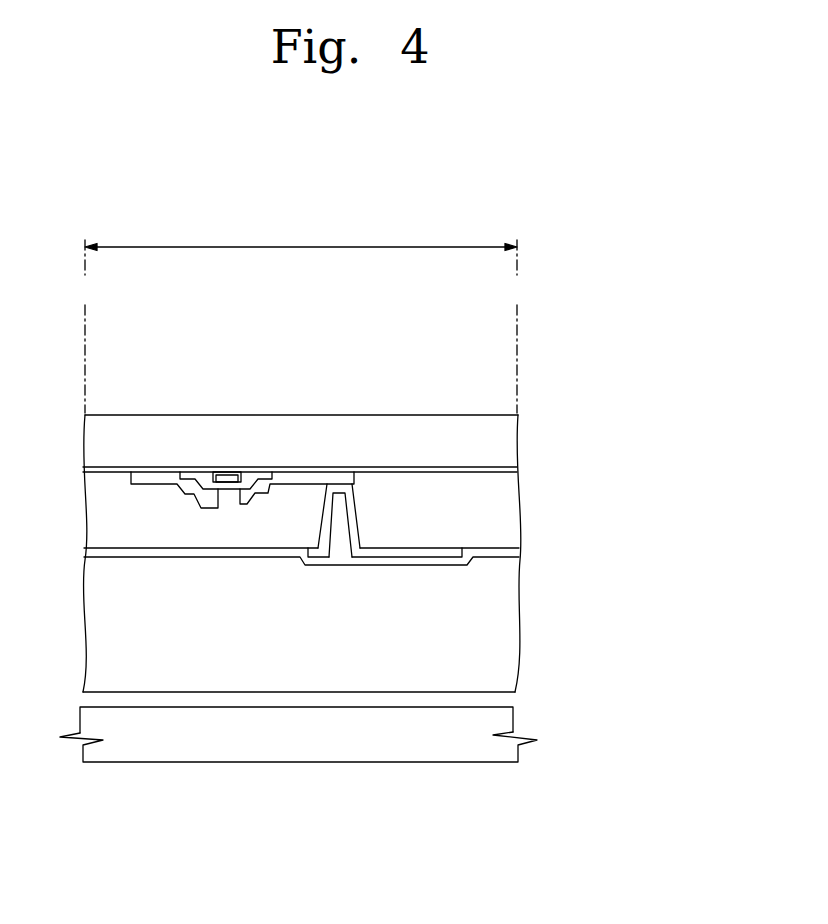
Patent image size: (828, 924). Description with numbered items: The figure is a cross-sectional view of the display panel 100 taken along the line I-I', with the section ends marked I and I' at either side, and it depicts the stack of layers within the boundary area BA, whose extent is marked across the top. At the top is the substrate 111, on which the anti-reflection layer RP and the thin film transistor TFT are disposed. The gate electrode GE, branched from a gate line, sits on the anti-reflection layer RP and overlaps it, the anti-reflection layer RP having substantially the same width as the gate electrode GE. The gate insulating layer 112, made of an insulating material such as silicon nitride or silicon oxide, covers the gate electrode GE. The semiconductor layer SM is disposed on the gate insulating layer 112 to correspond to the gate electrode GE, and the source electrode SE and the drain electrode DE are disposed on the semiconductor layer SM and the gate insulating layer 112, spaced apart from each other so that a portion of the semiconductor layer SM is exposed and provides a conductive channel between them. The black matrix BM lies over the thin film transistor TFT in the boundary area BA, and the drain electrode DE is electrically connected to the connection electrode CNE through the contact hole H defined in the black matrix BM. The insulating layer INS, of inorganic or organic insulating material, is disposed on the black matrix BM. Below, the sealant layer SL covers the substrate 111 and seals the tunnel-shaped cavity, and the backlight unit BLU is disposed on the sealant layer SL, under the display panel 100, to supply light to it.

The display panel 100 is at (603, 425).
The substrate 111 is at (503, 439).
The gate insulating layer 112 is at (503, 473).
The black matrix BM is at (503, 517).
The insulating layer INS is at (503, 553).
The sealant layer SL is at (503, 626).
The backlight unit BLU is at (500, 723).
The thin film transistor TFT is at (145, 367).
The source electrode SE is at (167, 480).
The gate electrode GE is at (220, 475).
The semiconductor layer SM is at (255, 486).
The drain electrode DE is at (313, 482).
The anti-reflection layer RP is at (230, 473).
The contact hole H is at (340, 542).
The connection electrode CNE is at (402, 553).
The boundary area BA is at (301, 238).
The section line I is at (85, 326).
The section line I' is at (520, 326).